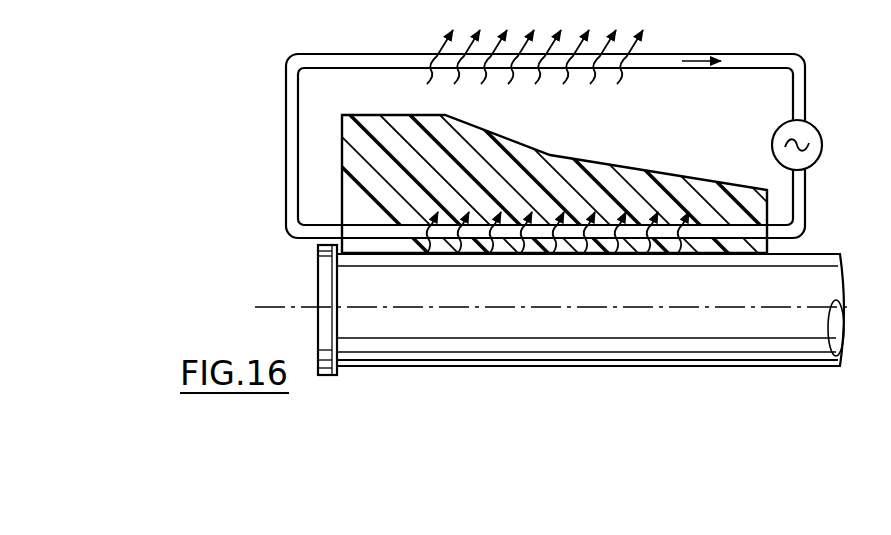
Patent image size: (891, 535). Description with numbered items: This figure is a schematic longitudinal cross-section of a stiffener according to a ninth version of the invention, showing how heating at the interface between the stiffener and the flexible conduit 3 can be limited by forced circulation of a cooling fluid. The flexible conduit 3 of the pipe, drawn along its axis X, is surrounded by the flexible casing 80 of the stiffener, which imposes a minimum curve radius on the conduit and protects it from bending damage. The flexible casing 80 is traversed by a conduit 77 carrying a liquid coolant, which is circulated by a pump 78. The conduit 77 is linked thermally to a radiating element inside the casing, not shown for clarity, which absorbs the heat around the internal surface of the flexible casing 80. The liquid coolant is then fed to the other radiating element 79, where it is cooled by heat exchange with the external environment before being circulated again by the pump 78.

The flexible conduit 3 is at (483, 273).
The conduit 77 is at (596, 253).
The pump 78 is at (813, 150).
The radiating element 79 is at (596, 84).
The flexible casing 80 is at (480, 162).
The tube axis X is at (273, 306).